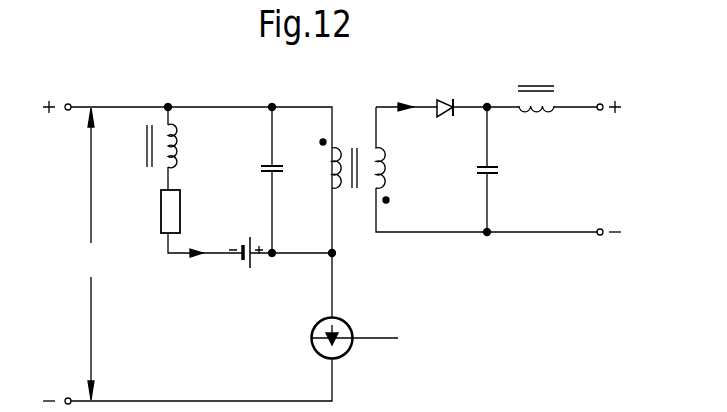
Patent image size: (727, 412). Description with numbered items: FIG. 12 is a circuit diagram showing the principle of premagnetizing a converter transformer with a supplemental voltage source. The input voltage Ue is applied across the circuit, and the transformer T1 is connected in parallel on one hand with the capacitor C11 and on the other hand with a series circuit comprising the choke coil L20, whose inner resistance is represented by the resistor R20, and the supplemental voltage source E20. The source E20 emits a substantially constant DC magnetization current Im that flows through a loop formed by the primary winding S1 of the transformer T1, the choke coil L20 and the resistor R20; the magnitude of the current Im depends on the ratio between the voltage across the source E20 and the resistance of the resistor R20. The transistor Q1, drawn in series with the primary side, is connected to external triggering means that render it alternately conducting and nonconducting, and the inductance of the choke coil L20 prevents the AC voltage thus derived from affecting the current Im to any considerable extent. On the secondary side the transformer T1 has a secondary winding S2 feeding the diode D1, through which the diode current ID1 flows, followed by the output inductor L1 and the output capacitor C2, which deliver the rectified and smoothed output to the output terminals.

The input voltage Ue is at (88, 254).
The choke coil L20 is at (178, 146).
The resistor R20 is at (190, 214).
The magnetization current Im is at (201, 269).
The supplemental voltage source E20 is at (251, 268).
The capacitor C11 is at (261, 180).
The primary winding S1 is at (323, 163).
The transformer T1 is at (354, 154).
The secondary winding S2 is at (393, 155).
The diode current ID1 is at (411, 123).
The diode D1 is at (448, 94).
The output inductor L1 is at (536, 84).
The output capacitor C2 is at (496, 169).
The transistor Q1 is at (355, 332).